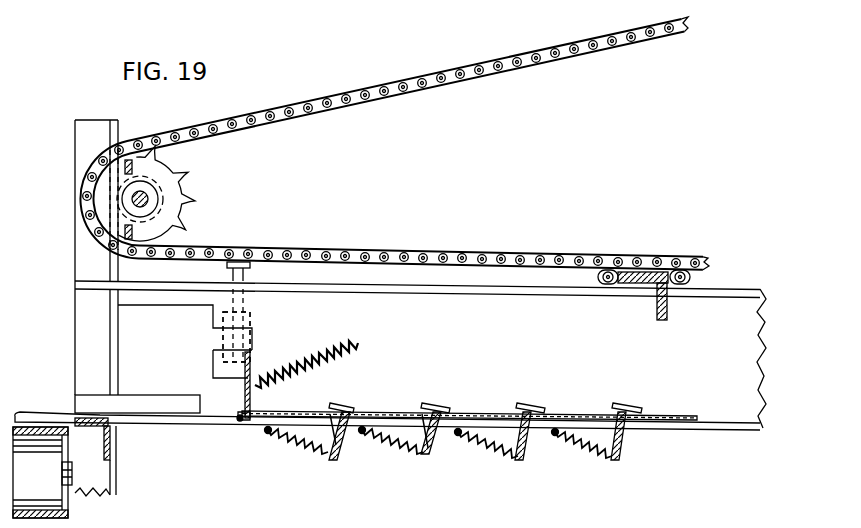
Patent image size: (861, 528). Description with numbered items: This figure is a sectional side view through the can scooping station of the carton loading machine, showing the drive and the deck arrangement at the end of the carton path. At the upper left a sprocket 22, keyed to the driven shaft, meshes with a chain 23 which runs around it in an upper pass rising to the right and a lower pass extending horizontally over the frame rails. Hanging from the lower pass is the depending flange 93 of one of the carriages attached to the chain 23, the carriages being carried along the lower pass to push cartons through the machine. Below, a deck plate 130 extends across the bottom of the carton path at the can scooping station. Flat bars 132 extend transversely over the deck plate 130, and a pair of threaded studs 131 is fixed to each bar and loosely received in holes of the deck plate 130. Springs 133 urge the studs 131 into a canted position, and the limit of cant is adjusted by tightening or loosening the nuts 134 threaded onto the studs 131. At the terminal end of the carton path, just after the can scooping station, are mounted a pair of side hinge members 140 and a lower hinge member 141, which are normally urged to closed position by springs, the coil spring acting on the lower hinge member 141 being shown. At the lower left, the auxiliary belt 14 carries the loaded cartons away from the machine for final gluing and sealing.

The auxiliary belt 14 is at (50, 438).
The sprockets 22 is at (178, 183).
The chains 23 is at (353, 105).
The depending flange 93 is at (666, 320).
The deck plate 130 is at (664, 390).
The threaded studs 131 is at (424, 456).
The flat bars 132 is at (427, 403).
The springs 133 is at (404, 454).
The nuts 134 is at (441, 427).
The side hinge members 140 is at (248, 338).
The lower hinge member 141 is at (257, 352).